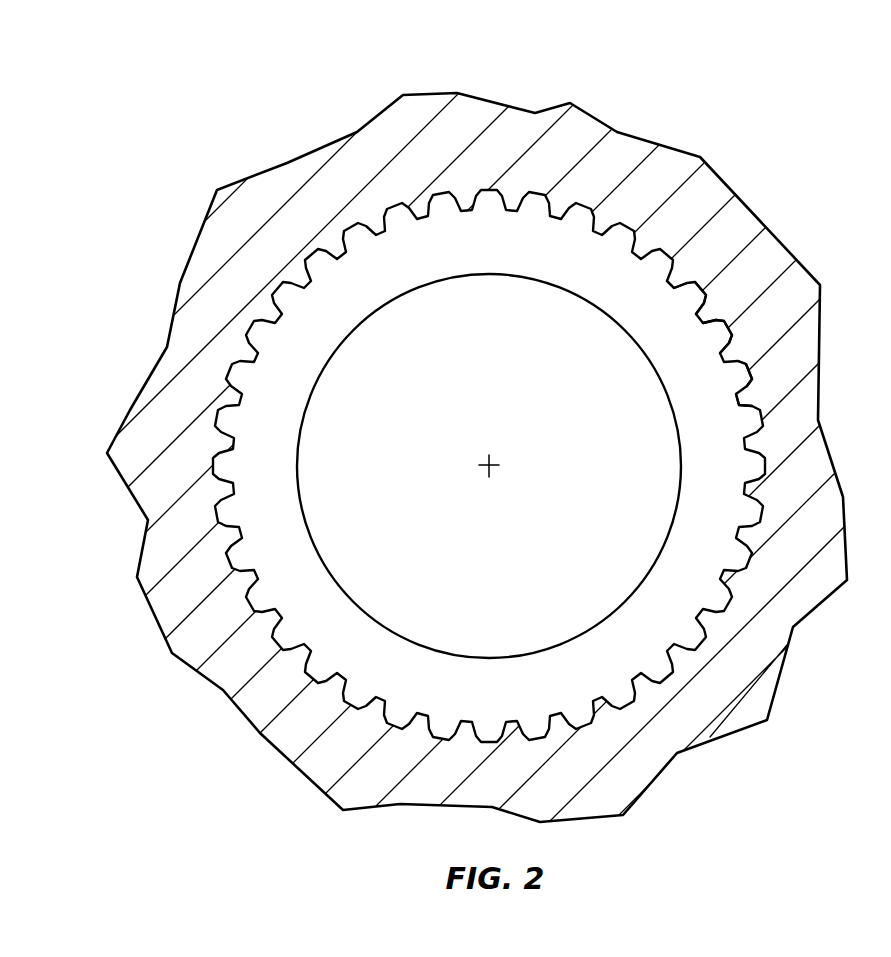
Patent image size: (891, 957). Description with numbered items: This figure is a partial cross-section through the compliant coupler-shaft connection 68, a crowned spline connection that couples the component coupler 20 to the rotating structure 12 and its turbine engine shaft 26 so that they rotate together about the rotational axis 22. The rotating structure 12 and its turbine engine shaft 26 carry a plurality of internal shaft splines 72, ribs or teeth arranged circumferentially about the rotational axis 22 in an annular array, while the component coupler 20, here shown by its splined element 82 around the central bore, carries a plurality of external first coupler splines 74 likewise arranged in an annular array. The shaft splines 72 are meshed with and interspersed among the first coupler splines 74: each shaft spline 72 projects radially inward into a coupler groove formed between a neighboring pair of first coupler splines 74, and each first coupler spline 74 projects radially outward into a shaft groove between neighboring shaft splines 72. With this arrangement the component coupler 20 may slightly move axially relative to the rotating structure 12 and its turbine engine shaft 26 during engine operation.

The rotating structure 12 is at (445, 437).
The turbine engine shaft 26 is at (672, 137).
The coupler-shaft connection 68 is at (760, 367).
The shaft splines 72 is at (700, 288).
The first coupler splines 74 is at (700, 330).
The component coupler 20 is at (489, 466).
The splined element 82 is at (563, 300).
The rotational axis 22 is at (493, 470).